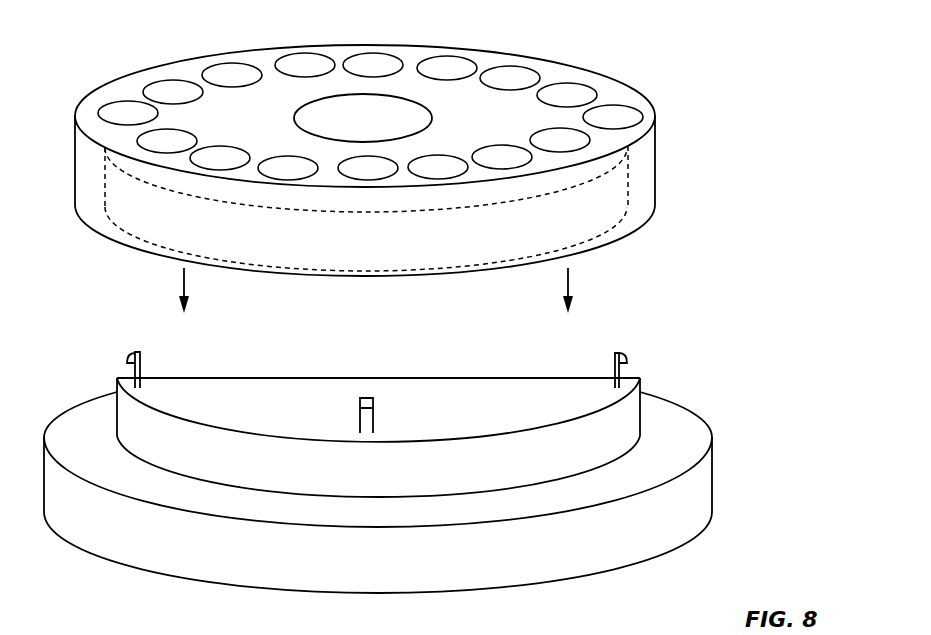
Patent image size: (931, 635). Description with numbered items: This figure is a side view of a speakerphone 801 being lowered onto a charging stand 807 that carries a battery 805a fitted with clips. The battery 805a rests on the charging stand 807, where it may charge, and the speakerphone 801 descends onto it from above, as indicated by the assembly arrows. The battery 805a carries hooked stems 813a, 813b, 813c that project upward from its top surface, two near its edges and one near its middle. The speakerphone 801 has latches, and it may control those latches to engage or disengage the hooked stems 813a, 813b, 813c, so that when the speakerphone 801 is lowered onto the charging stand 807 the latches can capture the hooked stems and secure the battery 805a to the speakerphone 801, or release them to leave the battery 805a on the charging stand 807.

The speakerphone 801 is at (679, 73).
The battery 805a is at (617, 427).
The charging stand 807 is at (698, 493).
The hooked stem 813a is at (622, 355).
The hooked stem 813b is at (373, 398).
The hooked stem 813c is at (131, 350).